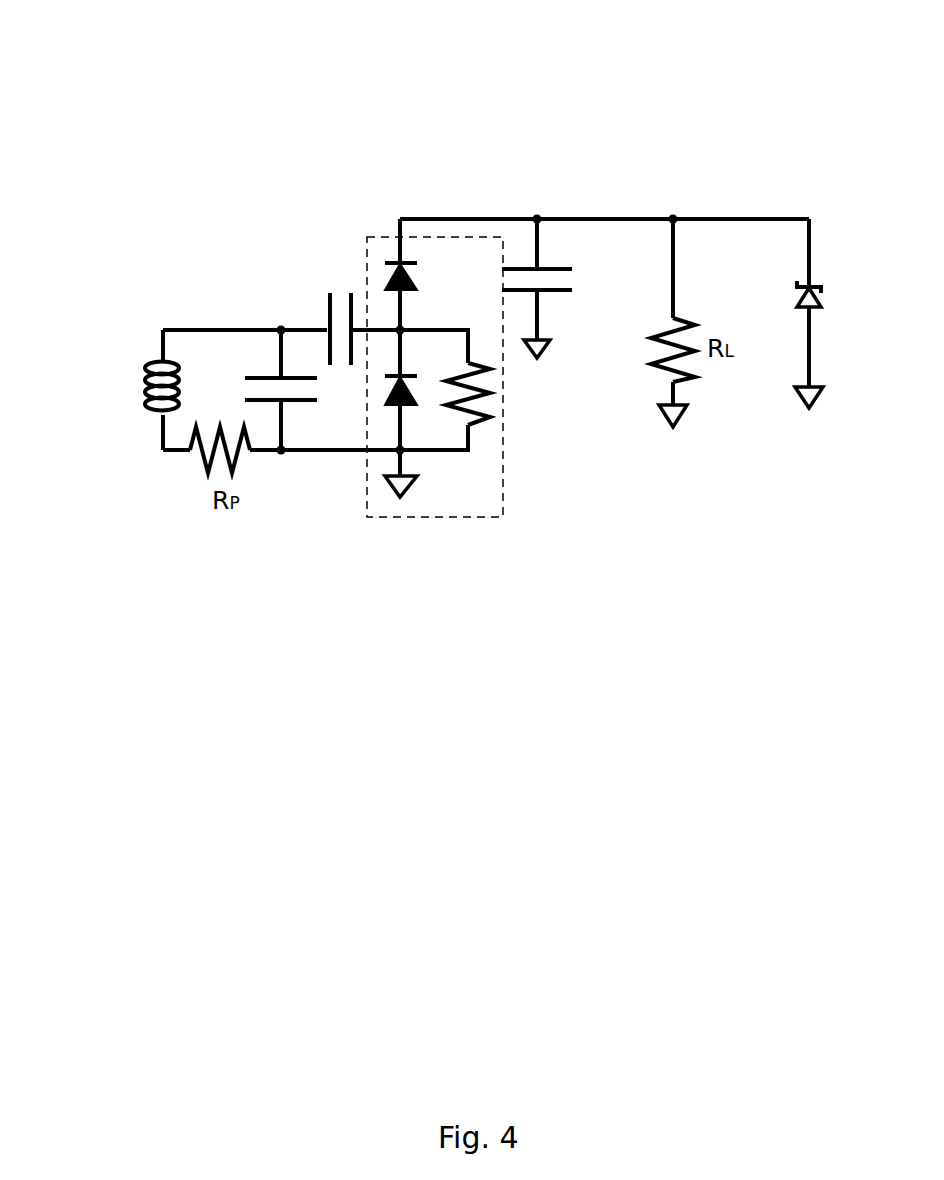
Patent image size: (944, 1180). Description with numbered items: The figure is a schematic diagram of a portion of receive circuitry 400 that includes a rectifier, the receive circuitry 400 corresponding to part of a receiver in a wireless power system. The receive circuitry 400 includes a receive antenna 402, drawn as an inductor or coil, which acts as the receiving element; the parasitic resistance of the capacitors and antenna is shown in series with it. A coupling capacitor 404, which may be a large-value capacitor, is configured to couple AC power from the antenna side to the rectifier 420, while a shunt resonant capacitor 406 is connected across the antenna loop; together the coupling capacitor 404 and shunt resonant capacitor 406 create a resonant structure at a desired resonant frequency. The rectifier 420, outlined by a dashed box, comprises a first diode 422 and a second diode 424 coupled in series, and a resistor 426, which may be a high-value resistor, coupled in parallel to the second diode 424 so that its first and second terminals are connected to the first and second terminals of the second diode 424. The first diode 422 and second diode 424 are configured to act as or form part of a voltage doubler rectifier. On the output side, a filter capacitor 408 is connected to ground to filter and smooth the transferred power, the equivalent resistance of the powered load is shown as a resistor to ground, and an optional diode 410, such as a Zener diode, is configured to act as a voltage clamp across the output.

The receive circuitry 400 is at (120, 56).
The receive antenna 402 is at (158, 364).
The coupling capacitor 404 is at (330, 297).
The shunt resonant capacitor 406 is at (275, 377).
The filter capacitor 408 is at (553, 266).
The diode 410 is at (818, 284).
The rectifier 420 is at (372, 224).
The first diode 422 is at (413, 283).
The second diode 424 is at (383, 400).
The resistor 426 is at (494, 399).